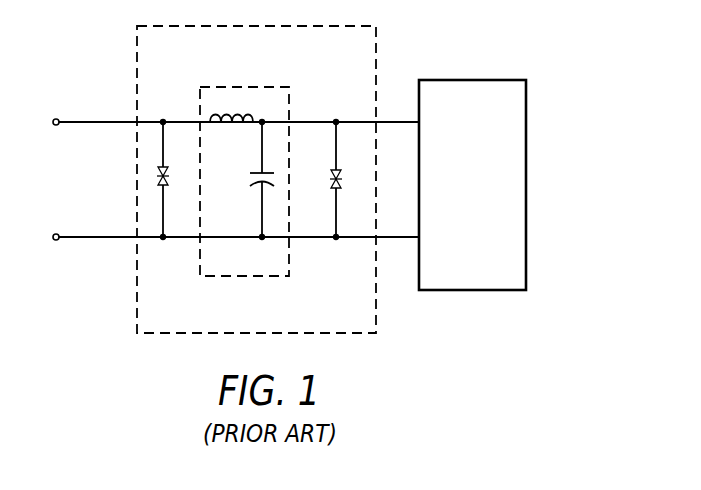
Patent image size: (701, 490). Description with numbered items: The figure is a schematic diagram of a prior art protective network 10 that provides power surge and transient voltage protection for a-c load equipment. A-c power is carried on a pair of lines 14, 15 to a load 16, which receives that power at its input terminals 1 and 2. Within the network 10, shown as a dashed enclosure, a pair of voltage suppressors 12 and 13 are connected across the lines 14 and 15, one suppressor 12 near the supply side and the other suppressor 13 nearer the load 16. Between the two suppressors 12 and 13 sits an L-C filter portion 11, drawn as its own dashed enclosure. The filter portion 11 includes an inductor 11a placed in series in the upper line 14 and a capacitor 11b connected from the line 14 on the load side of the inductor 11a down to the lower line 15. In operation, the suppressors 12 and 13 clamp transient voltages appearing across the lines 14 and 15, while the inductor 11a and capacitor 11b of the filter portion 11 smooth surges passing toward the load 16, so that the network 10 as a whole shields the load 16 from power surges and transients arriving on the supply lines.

The input terminal 1 is at (49, 122).
The input terminal 2 is at (48, 237).
The network 10 is at (362, 42).
The L-C filter portion 11 is at (278, 103).
The inductor 11a is at (217, 115).
The capacitor 11b is at (254, 183).
The voltage suppressor 12 is at (157, 174).
The voltage suppressor 13 is at (330, 179).
The line 14 is at (107, 122).
The line 15 is at (98, 237).
The load 16 is at (503, 115).